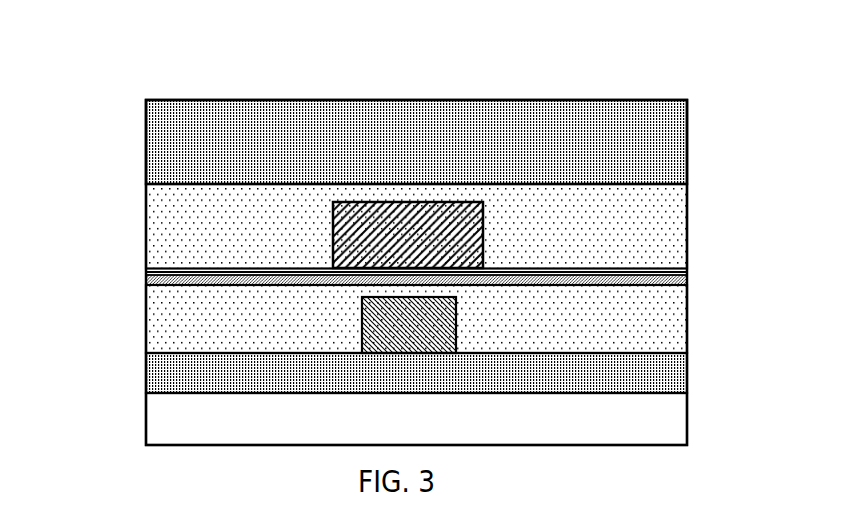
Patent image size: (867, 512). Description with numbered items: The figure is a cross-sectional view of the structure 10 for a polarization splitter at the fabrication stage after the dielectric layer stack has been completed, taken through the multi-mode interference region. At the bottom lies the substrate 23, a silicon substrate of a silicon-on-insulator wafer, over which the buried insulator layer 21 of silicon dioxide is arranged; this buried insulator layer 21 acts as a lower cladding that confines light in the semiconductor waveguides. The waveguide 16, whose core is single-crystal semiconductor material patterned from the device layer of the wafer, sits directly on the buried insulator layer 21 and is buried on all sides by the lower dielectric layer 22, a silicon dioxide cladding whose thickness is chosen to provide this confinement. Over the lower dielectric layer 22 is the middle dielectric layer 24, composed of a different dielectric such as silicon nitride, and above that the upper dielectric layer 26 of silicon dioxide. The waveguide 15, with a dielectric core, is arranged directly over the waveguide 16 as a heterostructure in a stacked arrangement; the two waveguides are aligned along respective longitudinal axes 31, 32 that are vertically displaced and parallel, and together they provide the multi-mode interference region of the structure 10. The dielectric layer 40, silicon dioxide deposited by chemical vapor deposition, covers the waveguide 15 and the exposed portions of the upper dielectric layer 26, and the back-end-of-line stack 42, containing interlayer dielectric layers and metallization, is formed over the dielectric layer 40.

The structure 10 is at (122, 58).
The back-end-of-line stack 42 is at (158, 140).
The dielectric layer 40 is at (158, 194).
The waveguide 15 is at (370, 240).
The longitudinal axis 31 is at (405, 232).
The upper dielectric layer 26 is at (158, 271).
The middle dielectric layer 24 is at (670, 282).
The waveguide 16 is at (382, 326).
The longitudinal axis 32 is at (404, 320).
The lower dielectric layer 22 is at (160, 342).
The buried insulator layer 21 is at (160, 370).
The substrate 23 is at (160, 413).